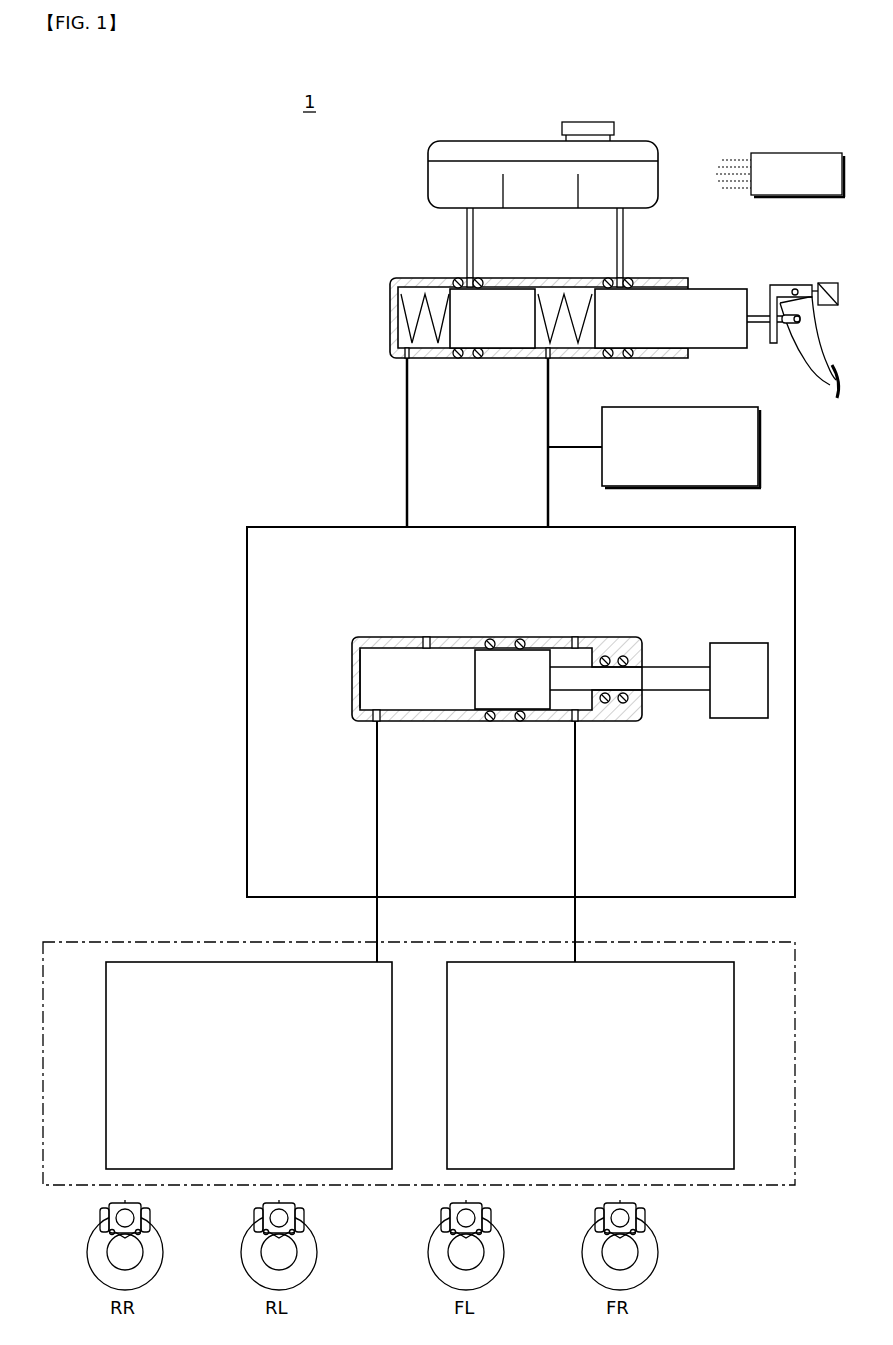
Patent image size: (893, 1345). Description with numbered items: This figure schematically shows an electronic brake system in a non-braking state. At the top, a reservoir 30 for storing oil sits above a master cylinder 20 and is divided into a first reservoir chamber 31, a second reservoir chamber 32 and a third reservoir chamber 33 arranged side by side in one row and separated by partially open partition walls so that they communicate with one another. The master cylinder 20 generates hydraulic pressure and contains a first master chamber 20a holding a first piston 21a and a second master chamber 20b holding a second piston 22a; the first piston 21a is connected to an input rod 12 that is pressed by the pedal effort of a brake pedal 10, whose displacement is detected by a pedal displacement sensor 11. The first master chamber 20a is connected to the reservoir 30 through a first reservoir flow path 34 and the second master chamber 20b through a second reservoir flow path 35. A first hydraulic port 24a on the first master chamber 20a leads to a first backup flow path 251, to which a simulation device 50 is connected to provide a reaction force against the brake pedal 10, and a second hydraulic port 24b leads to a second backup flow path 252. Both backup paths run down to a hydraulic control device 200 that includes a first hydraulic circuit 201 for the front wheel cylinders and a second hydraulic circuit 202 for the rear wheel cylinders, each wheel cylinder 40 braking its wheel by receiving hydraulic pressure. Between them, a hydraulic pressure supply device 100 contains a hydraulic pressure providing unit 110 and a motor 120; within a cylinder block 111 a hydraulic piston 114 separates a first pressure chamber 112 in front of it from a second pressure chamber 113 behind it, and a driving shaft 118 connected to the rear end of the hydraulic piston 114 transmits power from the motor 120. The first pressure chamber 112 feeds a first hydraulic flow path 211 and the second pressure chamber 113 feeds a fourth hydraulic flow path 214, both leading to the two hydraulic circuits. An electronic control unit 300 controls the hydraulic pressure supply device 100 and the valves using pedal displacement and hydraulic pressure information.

The brake pedal 10 is at (810, 332).
The pedal displacement sensor 11 is at (836, 284).
The input rod 12 is at (759, 315).
The master cylinder 20 is at (393, 298).
The first master chamber 20a is at (575, 291).
The second master chamber 20b is at (434, 291).
The first piston 21a is at (720, 293).
The second piston 22a is at (500, 297).
The first hydraulic port 24a is at (545, 360).
The second hydraulic port 24b is at (395, 358).
The reservoir 30 is at (428, 157).
The first reservoir chamber 31 is at (629, 181).
The second reservoir chamber 32 is at (537, 181).
The third reservoir chamber 33 is at (458, 181).
The first reservoir flow path 34 is at (623, 216).
The second reservoir flow path 35 is at (467, 216).
The wheel cylinder 40 is at (147, 1210).
The simulation device 50 is at (681, 447).
The hydraulic pressure supply device 100 is at (401, 605).
The hydraulic pressure providing unit 110 is at (350, 637).
The cylinder block 111 is at (361, 673).
The first pressure chamber 112 is at (378, 680).
The second pressure chamber 113 is at (584, 702).
The hydraulic piston 114 is at (537, 655).
The driving shaft 118 is at (678, 690).
The motor 120 is at (741, 643).
The hydraulic control device 200 is at (233, 938).
The first hydraulic circuit 201 is at (645, 962).
The second hydraulic circuit 202 is at (125, 962).
The first hydraulic flow path 211 is at (376, 729).
The fourth hydraulic flow path 214 is at (577, 770).
The first backup flow path 251 is at (547, 406).
The second backup flow path 252 is at (405, 406).
The electronic control unit 300 is at (780, 175).